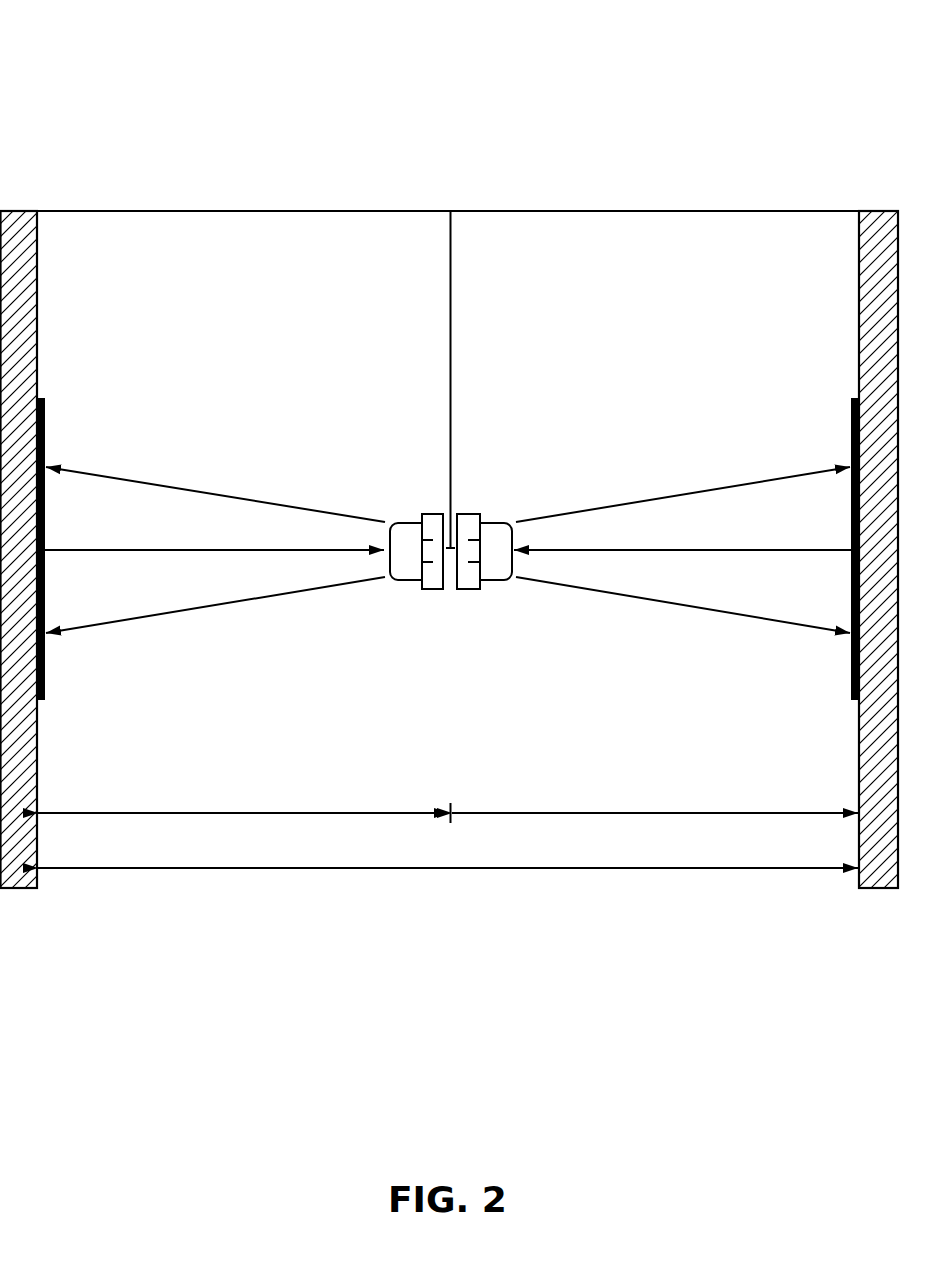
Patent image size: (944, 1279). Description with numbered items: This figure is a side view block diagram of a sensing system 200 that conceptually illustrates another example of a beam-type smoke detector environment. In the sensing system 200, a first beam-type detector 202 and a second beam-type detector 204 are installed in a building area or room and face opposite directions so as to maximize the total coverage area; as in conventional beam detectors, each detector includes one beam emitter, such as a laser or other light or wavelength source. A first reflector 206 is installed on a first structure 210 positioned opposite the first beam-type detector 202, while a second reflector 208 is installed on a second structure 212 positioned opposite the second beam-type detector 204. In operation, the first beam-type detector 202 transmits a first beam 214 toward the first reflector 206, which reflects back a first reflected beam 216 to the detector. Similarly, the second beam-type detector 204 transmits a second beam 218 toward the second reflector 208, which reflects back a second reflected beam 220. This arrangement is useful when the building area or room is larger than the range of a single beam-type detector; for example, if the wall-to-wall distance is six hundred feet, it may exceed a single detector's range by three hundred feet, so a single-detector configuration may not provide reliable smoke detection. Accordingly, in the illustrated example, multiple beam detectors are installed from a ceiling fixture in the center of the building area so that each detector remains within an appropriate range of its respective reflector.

The sensing system 200 is at (121, 50).
The first beam-type detector 202 is at (435, 589).
The second beam-type detector 204 is at (466, 589).
The first reflector 206 is at (45, 700).
The second reflector 208 is at (856, 702).
The first structure 210 is at (38, 307).
The second structure 212 is at (858, 307).
The first beam 214 is at (163, 483).
The first reflected beam 216 is at (155, 548).
The second beam 218 is at (717, 485).
The second reflected beam 220 is at (717, 548).